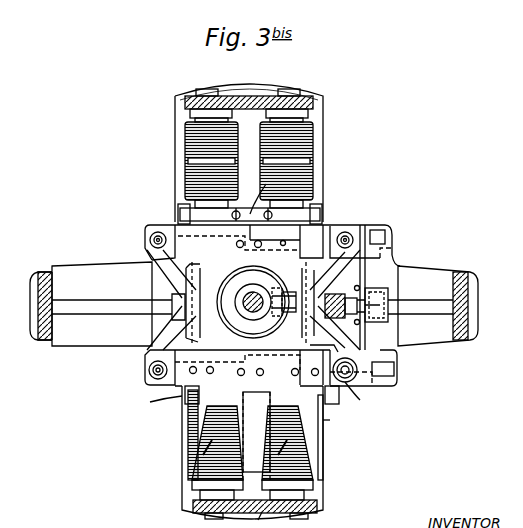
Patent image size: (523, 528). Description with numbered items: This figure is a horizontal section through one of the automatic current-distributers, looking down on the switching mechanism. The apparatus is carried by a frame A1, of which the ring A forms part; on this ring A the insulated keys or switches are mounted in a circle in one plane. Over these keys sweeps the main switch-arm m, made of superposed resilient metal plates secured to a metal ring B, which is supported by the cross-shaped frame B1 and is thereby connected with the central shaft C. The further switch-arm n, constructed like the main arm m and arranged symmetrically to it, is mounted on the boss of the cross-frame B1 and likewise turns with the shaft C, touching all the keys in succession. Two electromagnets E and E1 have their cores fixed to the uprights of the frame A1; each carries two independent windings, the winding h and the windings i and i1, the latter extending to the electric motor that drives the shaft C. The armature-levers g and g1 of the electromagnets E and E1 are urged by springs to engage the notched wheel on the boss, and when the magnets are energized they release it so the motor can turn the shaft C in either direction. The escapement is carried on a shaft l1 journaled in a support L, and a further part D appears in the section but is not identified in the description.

The ring A is at (248, 96).
The frame A1 is at (254, 304).
The electromagnet E1 is at (249, 163).
The electromagnet E is at (252, 453).
The winding h is at (249, 335).
The winding i1 is at (250, 200).
The winding i is at (354, 398).
The armature-lever g1 is at (259, 196).
The armature-lever g is at (156, 404).
The metal ring B is at (253, 289).
The cross-shaped frame B1 is at (342, 354).
The shaft C is at (256, 294).
The coupling D is at (294, 286).
The support L is at (372, 292).
The shaft of escapement l1 is at (366, 228).
The main switch-arm m is at (192, 424).
The switch-arm n is at (333, 427).